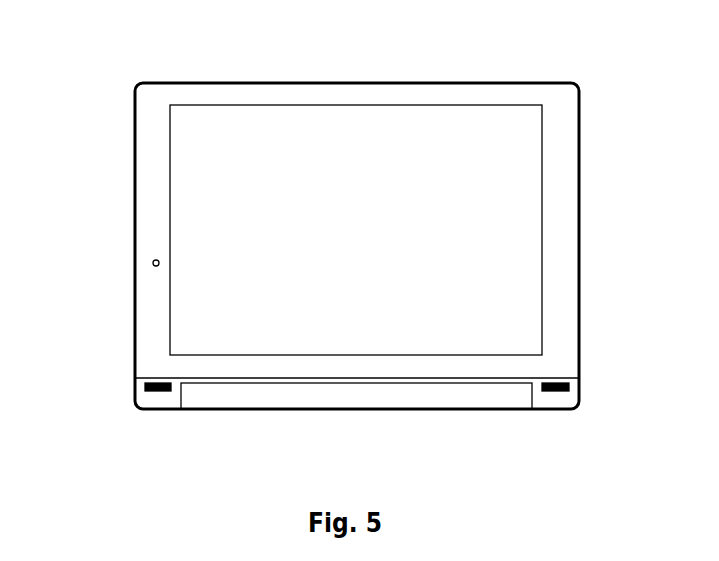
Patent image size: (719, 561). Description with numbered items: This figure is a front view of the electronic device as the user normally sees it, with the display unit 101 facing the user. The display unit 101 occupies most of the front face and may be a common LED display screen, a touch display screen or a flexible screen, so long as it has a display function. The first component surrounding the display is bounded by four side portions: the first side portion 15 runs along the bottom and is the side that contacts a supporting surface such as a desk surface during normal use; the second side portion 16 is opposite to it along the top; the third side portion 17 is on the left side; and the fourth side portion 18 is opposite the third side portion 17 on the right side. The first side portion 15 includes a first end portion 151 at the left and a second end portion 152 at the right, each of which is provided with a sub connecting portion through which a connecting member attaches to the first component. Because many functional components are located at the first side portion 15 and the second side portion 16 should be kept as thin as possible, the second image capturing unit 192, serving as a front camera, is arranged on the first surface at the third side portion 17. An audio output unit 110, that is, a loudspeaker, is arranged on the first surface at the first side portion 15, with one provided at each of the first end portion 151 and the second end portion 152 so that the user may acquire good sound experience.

The first side portion 15 is at (363, 378).
The second side portion 16 is at (332, 82).
The third side portion 17 is at (135, 212).
The fourth side portion 18 is at (579, 225).
The display unit 101 is at (527, 120).
The audio output unit 110 is at (152, 387).
The first end portion 151 is at (160, 408).
The second end portion 152 is at (553, 409).
The second image capturing unit 192 is at (154, 260).